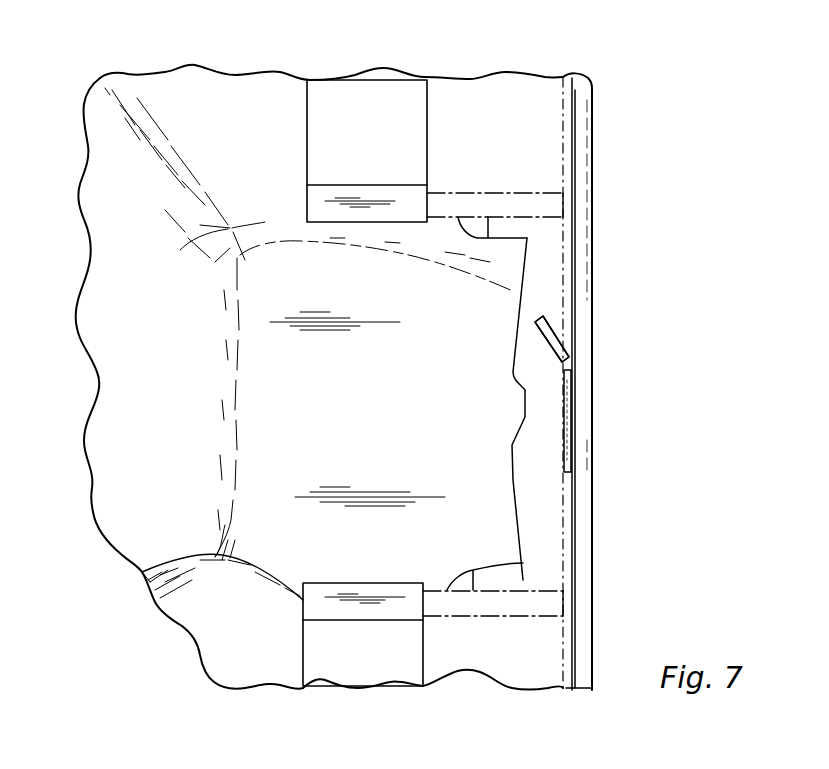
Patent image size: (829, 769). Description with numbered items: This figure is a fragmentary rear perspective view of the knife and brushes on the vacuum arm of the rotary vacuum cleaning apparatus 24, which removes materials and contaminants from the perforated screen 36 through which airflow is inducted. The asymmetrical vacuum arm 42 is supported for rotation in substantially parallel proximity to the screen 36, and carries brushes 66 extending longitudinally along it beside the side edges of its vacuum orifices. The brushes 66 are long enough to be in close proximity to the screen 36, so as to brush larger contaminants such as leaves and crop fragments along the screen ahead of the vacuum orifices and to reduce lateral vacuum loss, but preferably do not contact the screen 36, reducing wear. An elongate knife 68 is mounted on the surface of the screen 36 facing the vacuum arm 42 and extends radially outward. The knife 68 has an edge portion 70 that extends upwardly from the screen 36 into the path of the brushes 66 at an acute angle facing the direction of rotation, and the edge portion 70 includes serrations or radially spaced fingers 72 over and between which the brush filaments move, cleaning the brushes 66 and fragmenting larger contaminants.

The rotary vacuum cleaning apparatus 24 is at (98, 74).
The vacuum arm 42 is at (84, 163).
The brushes 66 is at (563, 140).
The screen 36 is at (572, 251).
The edge portion 70 is at (551, 322).
The fingers 72 is at (552, 339).
The knife 68 is at (558, 342).